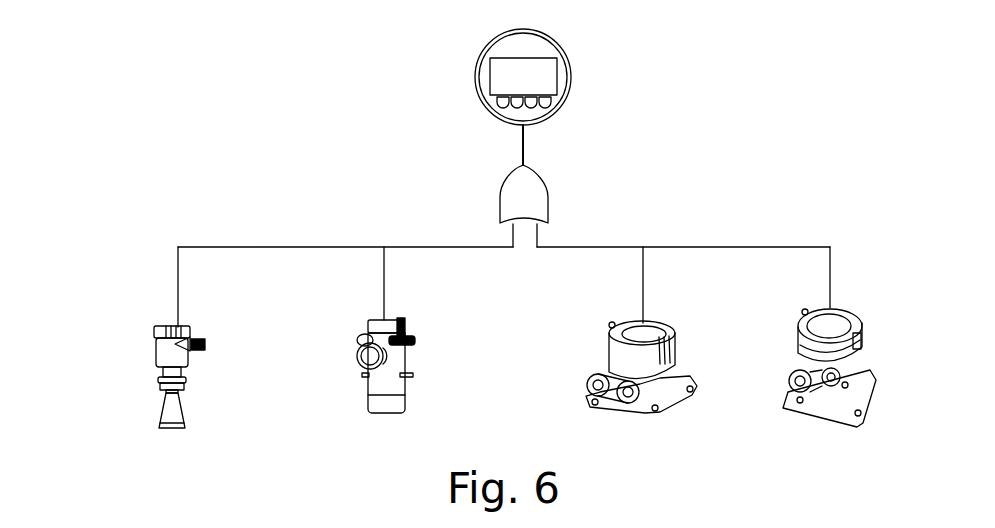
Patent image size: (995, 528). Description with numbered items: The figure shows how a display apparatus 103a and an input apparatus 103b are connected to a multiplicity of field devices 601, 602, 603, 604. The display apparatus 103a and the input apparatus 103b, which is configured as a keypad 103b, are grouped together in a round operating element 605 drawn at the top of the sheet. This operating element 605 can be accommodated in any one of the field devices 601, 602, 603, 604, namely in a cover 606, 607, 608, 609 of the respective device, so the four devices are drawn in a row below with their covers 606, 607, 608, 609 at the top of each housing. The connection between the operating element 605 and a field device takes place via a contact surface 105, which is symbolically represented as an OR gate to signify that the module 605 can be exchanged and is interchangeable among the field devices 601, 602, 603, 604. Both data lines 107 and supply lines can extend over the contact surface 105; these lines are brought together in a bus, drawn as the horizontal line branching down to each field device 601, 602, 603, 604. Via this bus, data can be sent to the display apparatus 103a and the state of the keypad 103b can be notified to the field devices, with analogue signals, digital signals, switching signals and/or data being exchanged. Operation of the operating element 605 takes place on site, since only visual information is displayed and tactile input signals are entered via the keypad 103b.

The operating element 605 is at (516, 64).
The display apparatus 103a is at (542, 78).
The input apparatus 103b is at (560, 100).
The data line 107 is at (531, 162).
The contact surface 105 is at (552, 199).
The field device 601 is at (124, 377).
The cover 606 is at (153, 331).
The field device 602 is at (333, 365).
The cover 607 is at (367, 325).
The field device 603 is at (588, 367).
The cover 608 is at (607, 340).
The field device 604 is at (788, 368).
The cover 609 is at (800, 333).